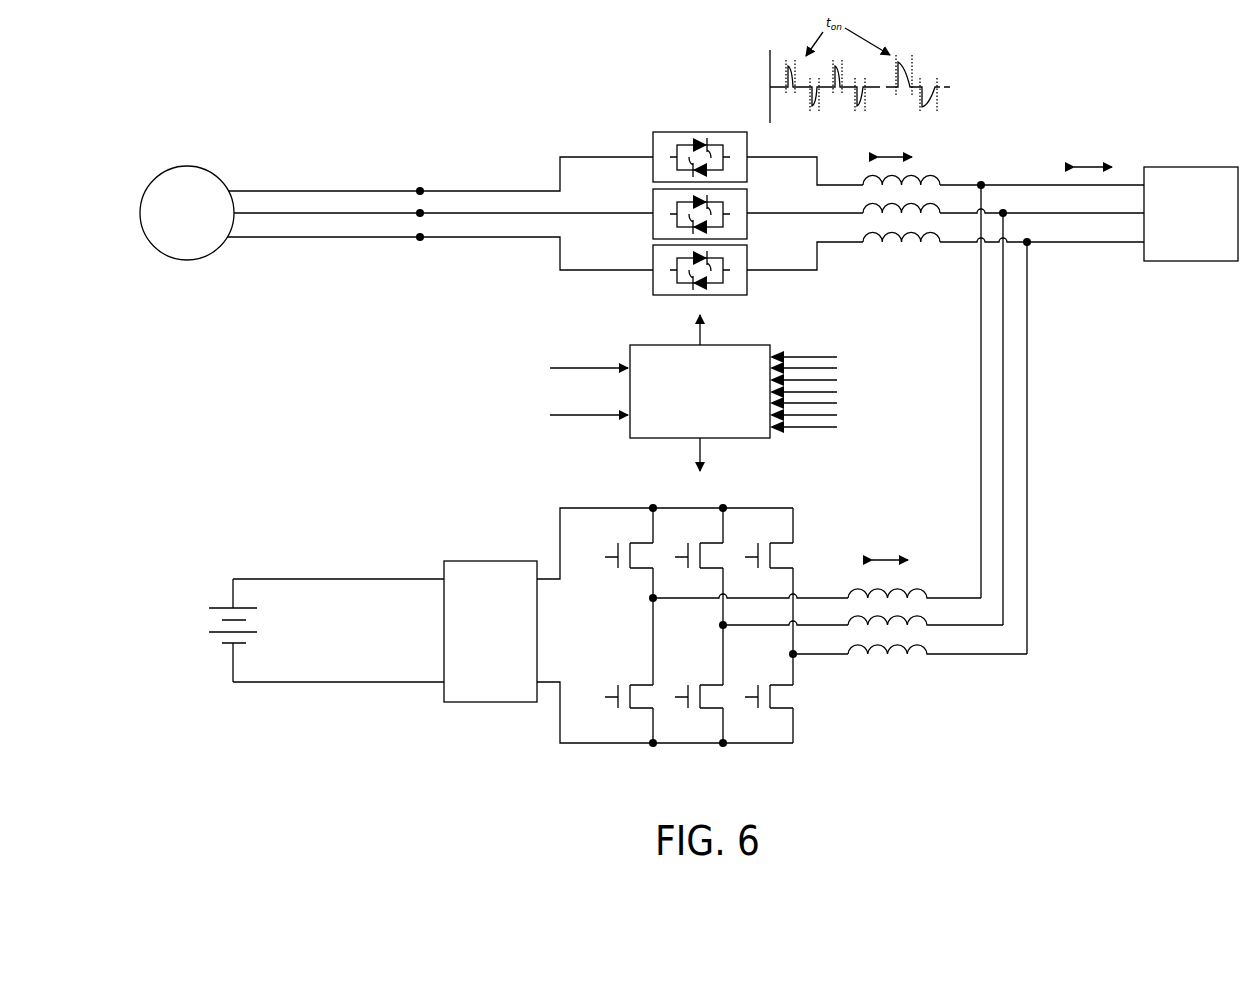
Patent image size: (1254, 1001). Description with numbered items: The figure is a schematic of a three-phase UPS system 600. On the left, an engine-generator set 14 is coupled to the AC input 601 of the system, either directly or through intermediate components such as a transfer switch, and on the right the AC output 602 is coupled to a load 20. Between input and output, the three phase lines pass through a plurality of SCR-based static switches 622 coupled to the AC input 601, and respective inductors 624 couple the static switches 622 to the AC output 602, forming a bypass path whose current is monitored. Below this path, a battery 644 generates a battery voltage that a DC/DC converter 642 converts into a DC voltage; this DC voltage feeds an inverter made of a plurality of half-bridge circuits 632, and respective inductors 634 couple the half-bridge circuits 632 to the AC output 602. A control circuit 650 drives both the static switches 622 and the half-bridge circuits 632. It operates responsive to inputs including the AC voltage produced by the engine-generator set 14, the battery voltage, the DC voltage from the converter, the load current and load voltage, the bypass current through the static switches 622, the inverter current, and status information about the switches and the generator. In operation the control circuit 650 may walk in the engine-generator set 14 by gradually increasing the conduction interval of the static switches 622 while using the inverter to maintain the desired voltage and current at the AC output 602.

The engine-generator set 14 is at (188, 166).
The load 20 is at (1190, 167).
The three-phase UPS system 600 is at (1053, 687).
The AC input 601 is at (432, 146).
The AC output 602 is at (1005, 153).
The SCR-based static switches 622 is at (700, 132).
The inductors 624 is at (907, 264).
The half-bridge circuits 632 is at (632, 724).
The inductors 634 is at (887, 680).
The DC/DC converter 642 is at (490, 561).
The battery 644 is at (213, 585).
The control circuit 650 is at (658, 345).